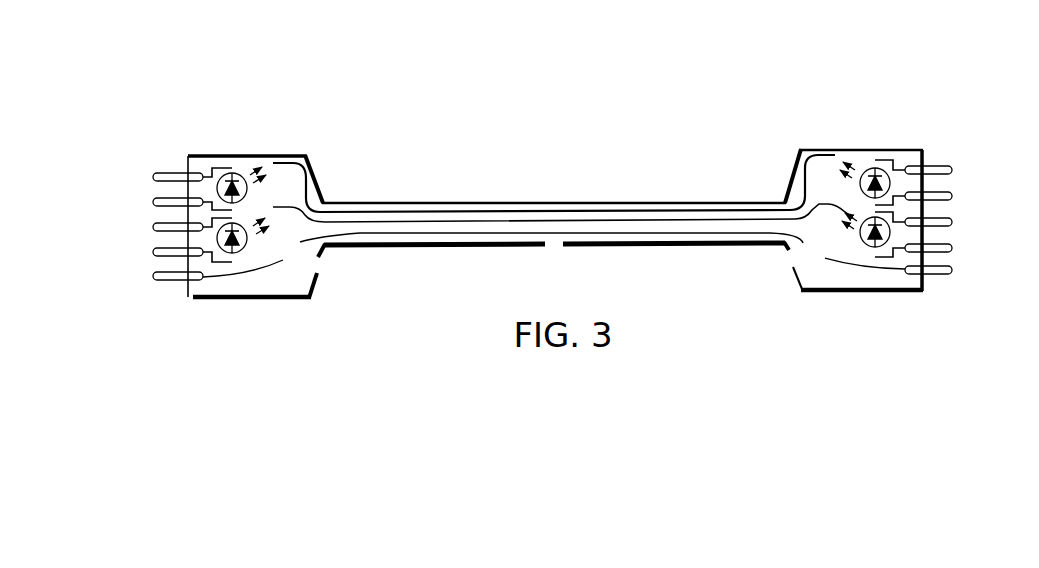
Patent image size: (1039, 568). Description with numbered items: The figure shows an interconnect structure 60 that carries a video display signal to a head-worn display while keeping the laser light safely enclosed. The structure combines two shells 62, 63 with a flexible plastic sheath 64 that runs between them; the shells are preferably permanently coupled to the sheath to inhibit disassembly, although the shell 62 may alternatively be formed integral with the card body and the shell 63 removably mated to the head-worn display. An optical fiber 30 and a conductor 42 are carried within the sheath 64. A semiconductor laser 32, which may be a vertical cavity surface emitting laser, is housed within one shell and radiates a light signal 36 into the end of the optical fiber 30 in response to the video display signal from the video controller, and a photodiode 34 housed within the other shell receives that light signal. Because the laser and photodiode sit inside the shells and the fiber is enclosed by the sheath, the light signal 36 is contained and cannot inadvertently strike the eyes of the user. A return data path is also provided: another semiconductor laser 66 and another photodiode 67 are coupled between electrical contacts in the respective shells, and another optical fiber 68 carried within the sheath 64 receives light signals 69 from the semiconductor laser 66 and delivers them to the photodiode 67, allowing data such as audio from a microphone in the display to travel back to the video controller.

The interconnect structure 60 is at (466, 139).
The shell 62 is at (274, 252).
The shell 63 is at (872, 249).
The optical fiber 30 is at (554, 177).
The optical fiber 68 is at (563, 186).
The conductor 42 is at (555, 236).
The sheath 64 is at (553, 272).
The semiconductor laser 66 is at (170, 170).
The semiconductor laser 32 is at (243, 189).
The photodiode 34 is at (866, 182).
The photodiode 67 is at (242, 241).
The light signal 36 is at (247, 160).
The light signals 69 is at (272, 237).